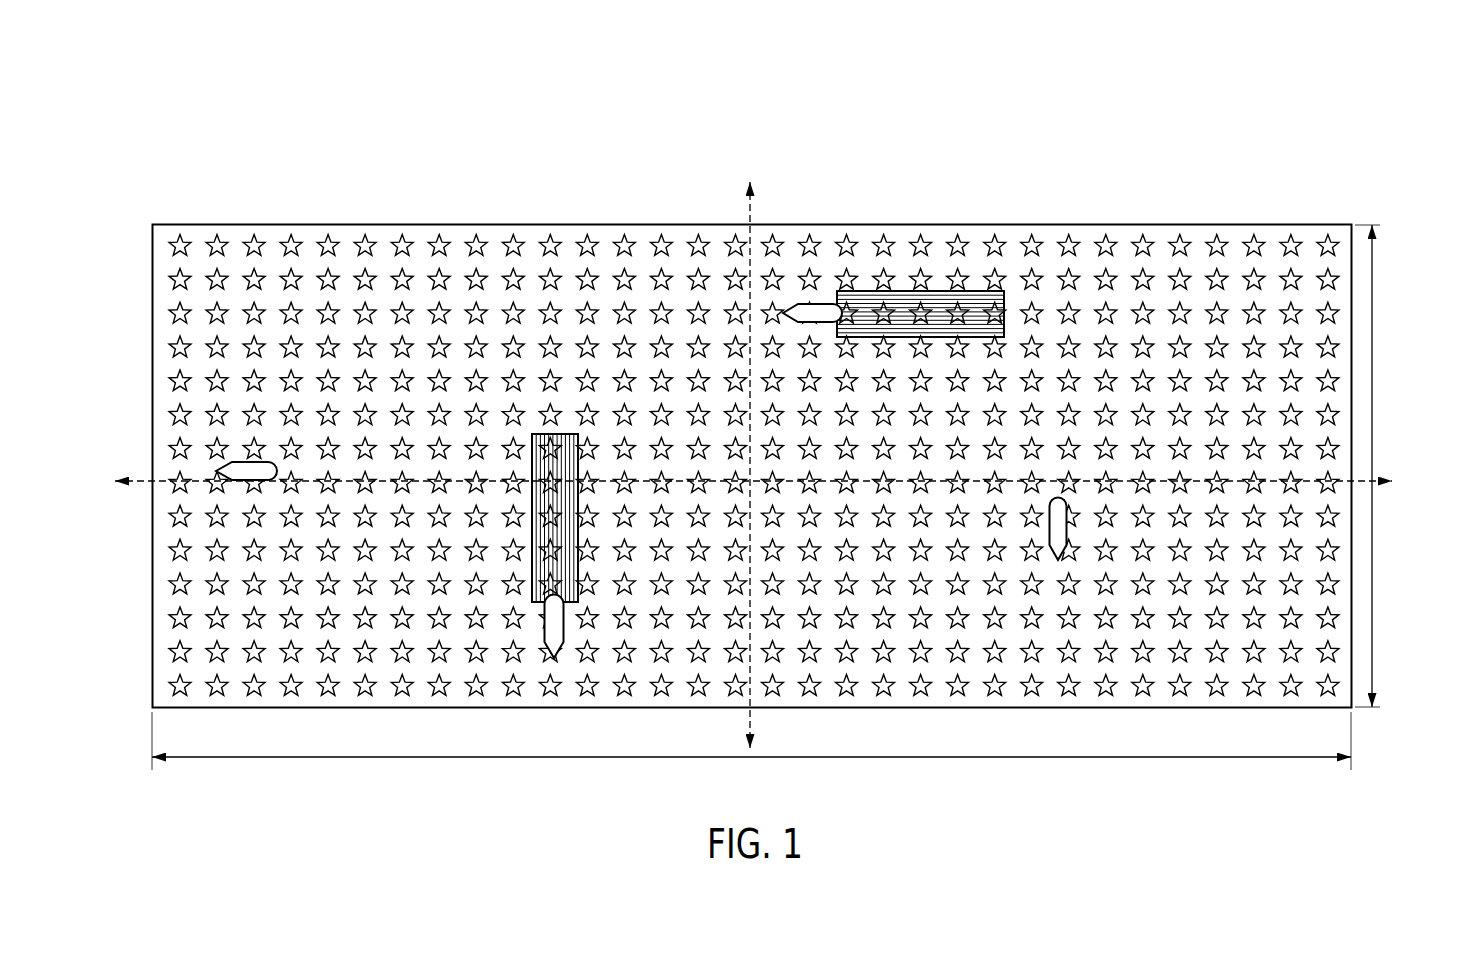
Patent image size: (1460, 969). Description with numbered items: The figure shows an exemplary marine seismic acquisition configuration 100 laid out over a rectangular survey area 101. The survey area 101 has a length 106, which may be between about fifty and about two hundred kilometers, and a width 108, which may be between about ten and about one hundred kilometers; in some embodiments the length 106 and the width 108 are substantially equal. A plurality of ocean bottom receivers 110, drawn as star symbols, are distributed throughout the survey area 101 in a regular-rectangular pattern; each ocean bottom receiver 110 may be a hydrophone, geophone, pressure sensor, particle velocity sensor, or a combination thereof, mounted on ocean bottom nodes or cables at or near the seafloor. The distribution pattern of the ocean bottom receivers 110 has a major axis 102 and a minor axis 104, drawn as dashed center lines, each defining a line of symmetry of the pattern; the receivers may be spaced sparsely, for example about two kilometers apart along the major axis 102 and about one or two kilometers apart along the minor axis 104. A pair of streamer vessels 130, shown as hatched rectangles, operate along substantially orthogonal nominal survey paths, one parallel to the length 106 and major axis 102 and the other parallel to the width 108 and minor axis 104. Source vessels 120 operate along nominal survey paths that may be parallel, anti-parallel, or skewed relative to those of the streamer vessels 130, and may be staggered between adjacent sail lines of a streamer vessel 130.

The acquisition configuration 100 is at (1188, 90).
The survey area 101 is at (1200, 223).
The major axis 102 is at (147, 485).
The minor axis 104 is at (750, 225).
The length 106 is at (355, 757).
The width 108 is at (1372, 625).
The ocean bottom receivers 110 is at (510, 277).
The source vessels 120 is at (233, 438).
The streamer vessels 130 is at (562, 402).